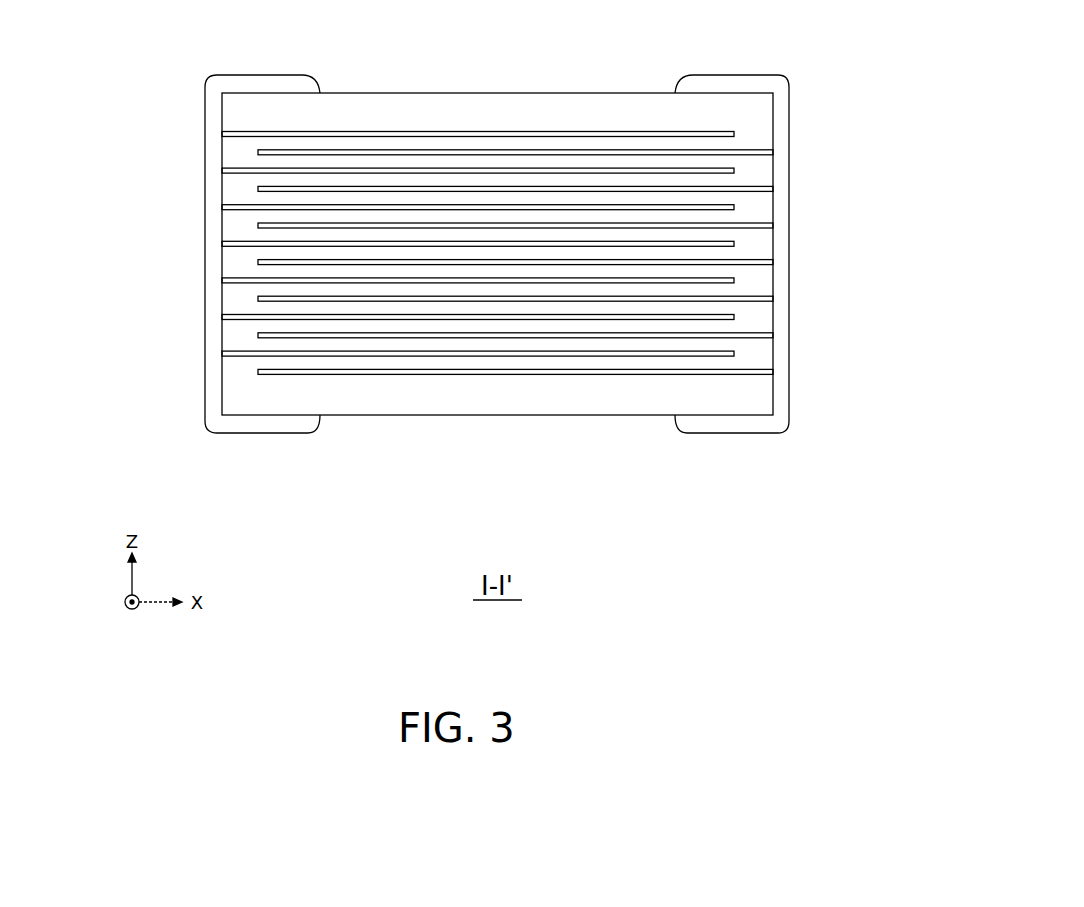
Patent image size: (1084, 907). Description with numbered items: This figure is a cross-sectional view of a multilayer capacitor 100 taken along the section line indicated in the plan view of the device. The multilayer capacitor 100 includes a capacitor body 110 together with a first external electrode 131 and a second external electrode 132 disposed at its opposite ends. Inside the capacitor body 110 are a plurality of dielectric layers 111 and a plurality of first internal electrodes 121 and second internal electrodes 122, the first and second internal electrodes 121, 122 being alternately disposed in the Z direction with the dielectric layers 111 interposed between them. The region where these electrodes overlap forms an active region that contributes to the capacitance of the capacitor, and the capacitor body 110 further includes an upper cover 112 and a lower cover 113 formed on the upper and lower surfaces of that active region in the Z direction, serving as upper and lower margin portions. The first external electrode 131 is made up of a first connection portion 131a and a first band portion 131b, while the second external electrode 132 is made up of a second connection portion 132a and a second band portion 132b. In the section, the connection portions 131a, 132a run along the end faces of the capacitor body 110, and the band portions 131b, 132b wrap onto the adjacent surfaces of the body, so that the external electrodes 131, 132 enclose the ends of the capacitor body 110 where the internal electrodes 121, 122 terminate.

The multilayer capacitor 100 is at (499, 235).
The capacitor body 110 is at (538, 248).
The dielectric layers 111 is at (758, 248).
The upper cover 112 is at (593, 115).
The lower cover 113 is at (620, 397).
The first internal electrodes 121 is at (420, 150).
The second internal electrodes 122 is at (465, 340).
The first external electrode 131 is at (193, 268).
The first connection portion 131a is at (215, 385).
The first band portion 131b is at (240, 423).
The second external electrode 132 is at (803, 268).
The second connection portion 132a is at (775, 385).
The second band portion 132b is at (748, 430).